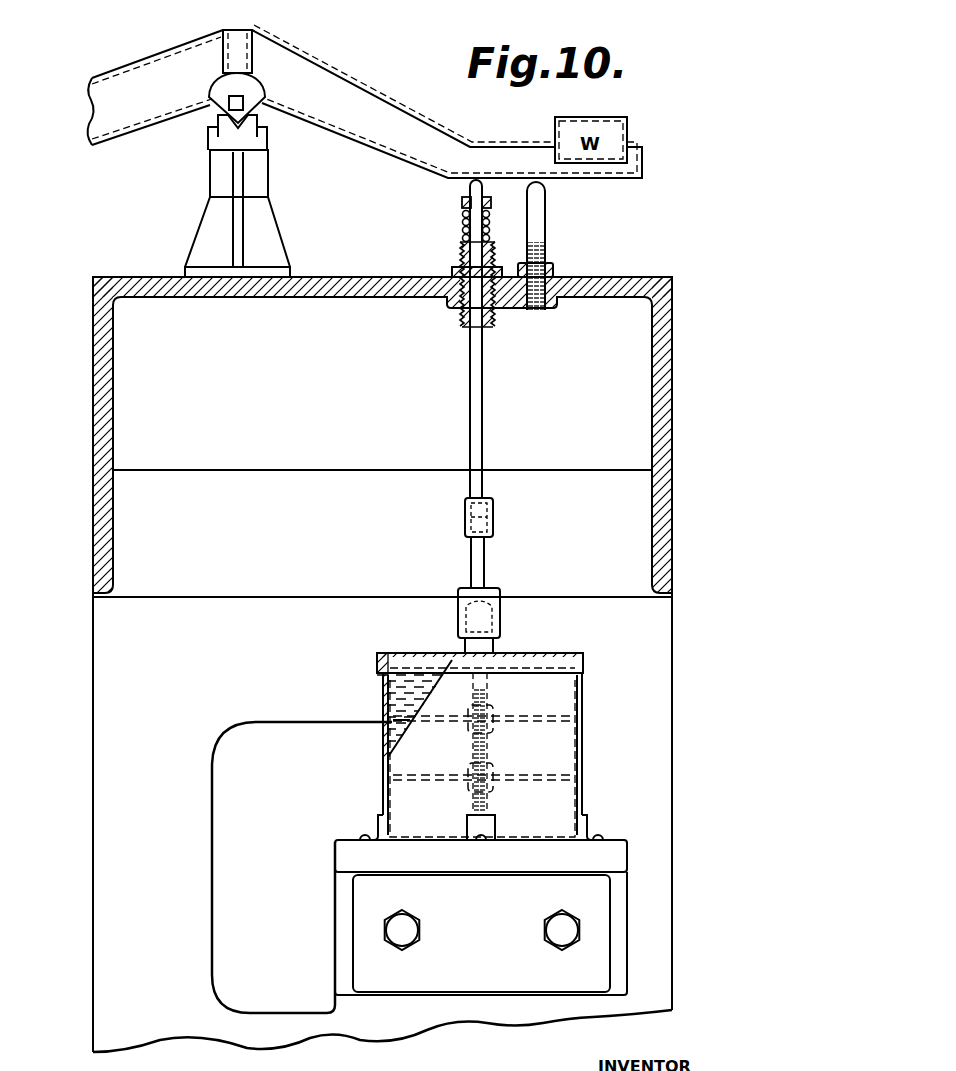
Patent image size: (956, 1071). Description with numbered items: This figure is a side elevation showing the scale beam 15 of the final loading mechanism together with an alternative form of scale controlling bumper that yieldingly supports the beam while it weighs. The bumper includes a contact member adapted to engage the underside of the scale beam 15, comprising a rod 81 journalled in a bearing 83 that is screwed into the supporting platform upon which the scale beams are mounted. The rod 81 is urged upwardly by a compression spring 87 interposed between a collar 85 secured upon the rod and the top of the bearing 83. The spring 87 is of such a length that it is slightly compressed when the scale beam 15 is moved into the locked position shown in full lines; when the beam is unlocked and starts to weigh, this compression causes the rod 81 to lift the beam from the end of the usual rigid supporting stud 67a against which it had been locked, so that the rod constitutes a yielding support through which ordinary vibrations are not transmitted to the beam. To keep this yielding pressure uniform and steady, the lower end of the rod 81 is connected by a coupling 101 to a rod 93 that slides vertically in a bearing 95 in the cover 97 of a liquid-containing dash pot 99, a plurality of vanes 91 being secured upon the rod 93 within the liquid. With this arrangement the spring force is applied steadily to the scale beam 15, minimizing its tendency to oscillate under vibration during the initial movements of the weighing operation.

The scale beam 15 is at (325, 83).
The rod 81 is at (470, 370).
The collar 85 is at (462, 200).
The compression spring 87 is at (462, 222).
The bearing 83 is at (460, 248).
The rigid supporting stud 67a is at (538, 222).
The coupling 101 is at (495, 512).
The rod 93 is at (480, 574).
The bearing 95 is at (497, 640).
The cover 97 is at (550, 655).
The dash pot 99 is at (580, 702).
The vanes 91 is at (517, 717).